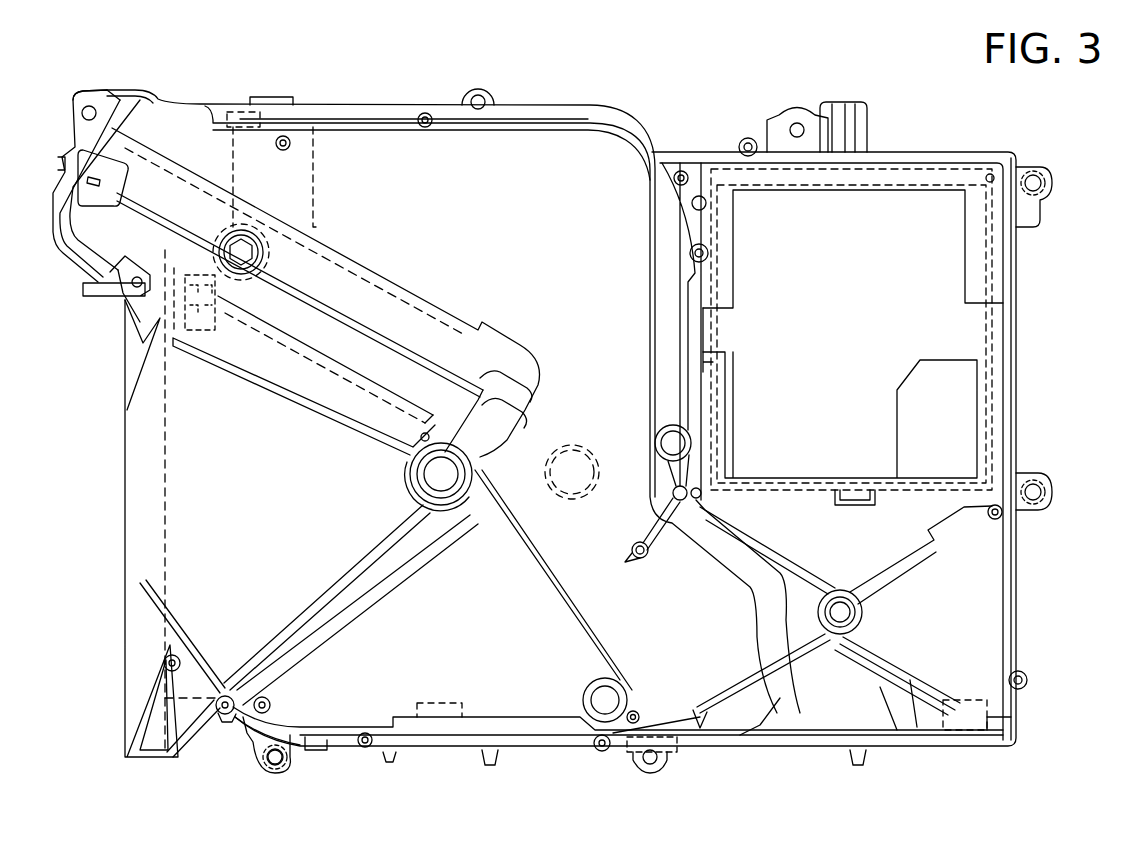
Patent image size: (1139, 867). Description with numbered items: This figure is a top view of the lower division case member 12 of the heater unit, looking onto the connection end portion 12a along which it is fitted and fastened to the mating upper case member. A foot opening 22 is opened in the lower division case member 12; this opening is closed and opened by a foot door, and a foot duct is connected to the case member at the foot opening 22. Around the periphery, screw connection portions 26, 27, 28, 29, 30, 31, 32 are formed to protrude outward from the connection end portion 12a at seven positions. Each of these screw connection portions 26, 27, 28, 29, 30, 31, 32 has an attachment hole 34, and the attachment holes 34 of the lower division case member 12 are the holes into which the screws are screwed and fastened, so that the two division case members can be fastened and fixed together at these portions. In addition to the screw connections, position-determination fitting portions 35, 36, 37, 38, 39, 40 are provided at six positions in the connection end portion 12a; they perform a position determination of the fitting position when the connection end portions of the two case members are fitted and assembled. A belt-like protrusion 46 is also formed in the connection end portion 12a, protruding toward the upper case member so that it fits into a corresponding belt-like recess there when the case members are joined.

The lower division case member 12 is at (612, 100).
The connection end portion 12a is at (558, 122).
The foot opening 22 is at (898, 338).
The screw connection portion 26 is at (290, 757).
The screw connection portion 27 is at (668, 760).
The screw connection portion 28 is at (1047, 478).
The screw connection portion 29 is at (1047, 170).
The screw connection portion 30 is at (810, 120).
The screw connection portion 31 is at (492, 95).
The screw connection portion 32 is at (78, 100).
The attachment hole 34 is at (90, 105).
The position-determination fitting portion 35 is at (222, 717).
The position-determination fitting portion 36 is at (365, 750).
The position-determination fitting portion 37 is at (603, 752).
The position-determination fitting portion 38 is at (1032, 680).
The position-determination fitting portion 39 is at (748, 137).
The position-determination fitting portion 40 is at (425, 112).
The belt-like protrusion 46 is at (352, 130).